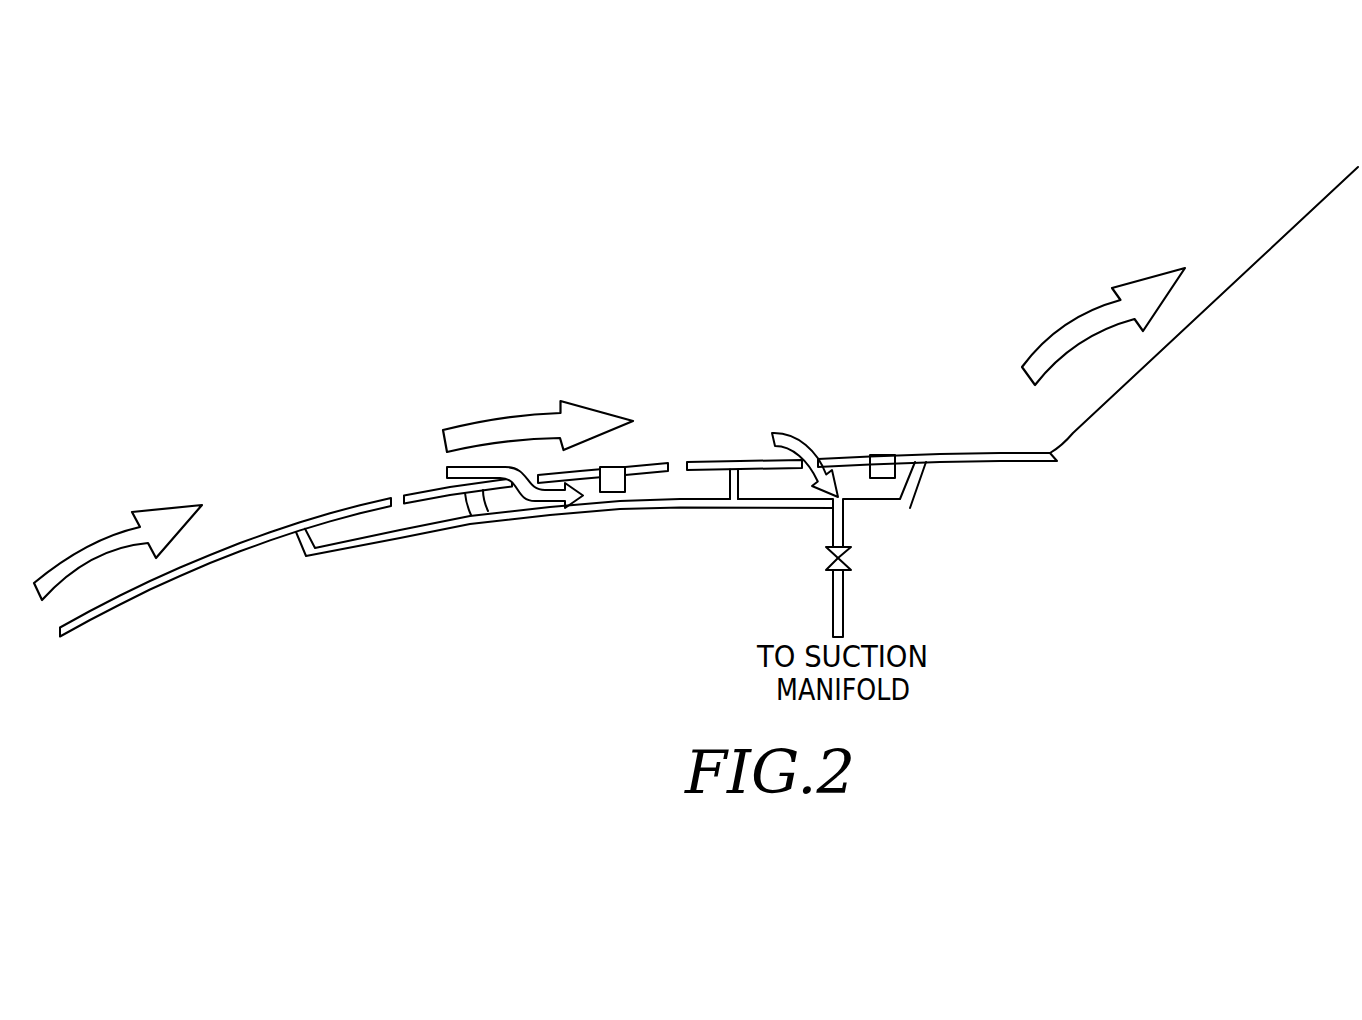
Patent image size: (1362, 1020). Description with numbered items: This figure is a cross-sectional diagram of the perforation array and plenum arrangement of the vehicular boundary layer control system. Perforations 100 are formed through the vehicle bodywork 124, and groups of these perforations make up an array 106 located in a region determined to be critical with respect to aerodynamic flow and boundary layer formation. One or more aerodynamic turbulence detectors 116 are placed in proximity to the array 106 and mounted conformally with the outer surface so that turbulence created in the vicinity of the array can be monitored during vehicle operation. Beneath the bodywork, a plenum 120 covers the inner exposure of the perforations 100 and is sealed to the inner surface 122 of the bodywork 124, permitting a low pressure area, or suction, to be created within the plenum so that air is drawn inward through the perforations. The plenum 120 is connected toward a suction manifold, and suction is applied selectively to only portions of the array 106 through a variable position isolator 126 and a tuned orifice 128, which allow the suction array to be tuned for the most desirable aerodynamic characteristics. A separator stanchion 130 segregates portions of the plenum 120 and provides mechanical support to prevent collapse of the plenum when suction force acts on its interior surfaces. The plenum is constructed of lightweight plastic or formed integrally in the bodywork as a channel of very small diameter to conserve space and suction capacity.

The perforations 100 is at (394, 480).
The array of perforations 106 is at (583, 372).
The aerodynamic turbulence detector 116 is at (624, 453).
The plenum 120 is at (346, 554).
The inner surface 122 is at (944, 479).
The vehicle bodywork 124 is at (240, 500).
The variable position isolator 126 is at (847, 558).
The tuned orifice 128 is at (722, 491).
The separator stanchion 130 is at (463, 510).